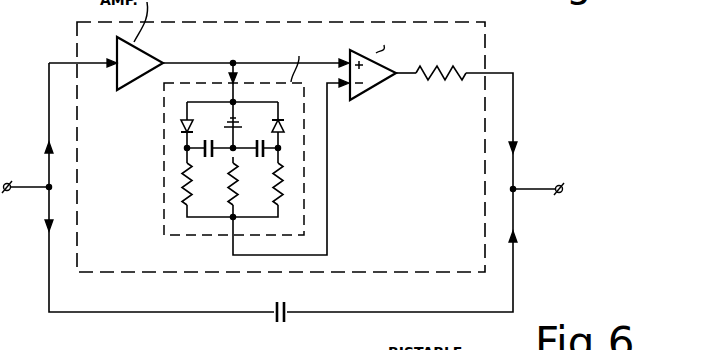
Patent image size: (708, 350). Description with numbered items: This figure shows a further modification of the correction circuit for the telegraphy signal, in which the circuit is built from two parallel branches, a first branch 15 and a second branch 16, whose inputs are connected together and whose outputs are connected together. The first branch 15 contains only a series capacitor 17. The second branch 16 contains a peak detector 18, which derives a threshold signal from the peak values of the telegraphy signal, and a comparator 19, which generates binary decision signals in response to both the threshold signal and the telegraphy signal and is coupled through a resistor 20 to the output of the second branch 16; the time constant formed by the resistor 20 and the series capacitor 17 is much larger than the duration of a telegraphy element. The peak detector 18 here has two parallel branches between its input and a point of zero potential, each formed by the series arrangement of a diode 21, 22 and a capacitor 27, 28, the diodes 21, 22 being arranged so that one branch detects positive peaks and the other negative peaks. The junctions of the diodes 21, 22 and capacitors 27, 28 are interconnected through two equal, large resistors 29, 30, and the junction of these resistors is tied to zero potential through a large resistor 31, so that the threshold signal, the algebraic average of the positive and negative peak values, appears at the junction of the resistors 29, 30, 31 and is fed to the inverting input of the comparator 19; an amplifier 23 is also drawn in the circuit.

The first branch 15 is at (153, 301).
The second branch 16 is at (487, 24).
The series capacitor 17 is at (282, 302).
The peak detector 18 is at (163, 112).
The comparator 19 is at (379, 88).
The resistor 20 is at (449, 83).
The diode 21 is at (192, 128).
The diode 22 is at (270, 128).
The amplifier 23 is at (150, 53).
The capacitor 27 is at (186, 147).
The capacitor 28 is at (283, 147).
The resistor 29 is at (182, 180).
The resistor 30 is at (284, 178).
The resistor 31 is at (238, 189).